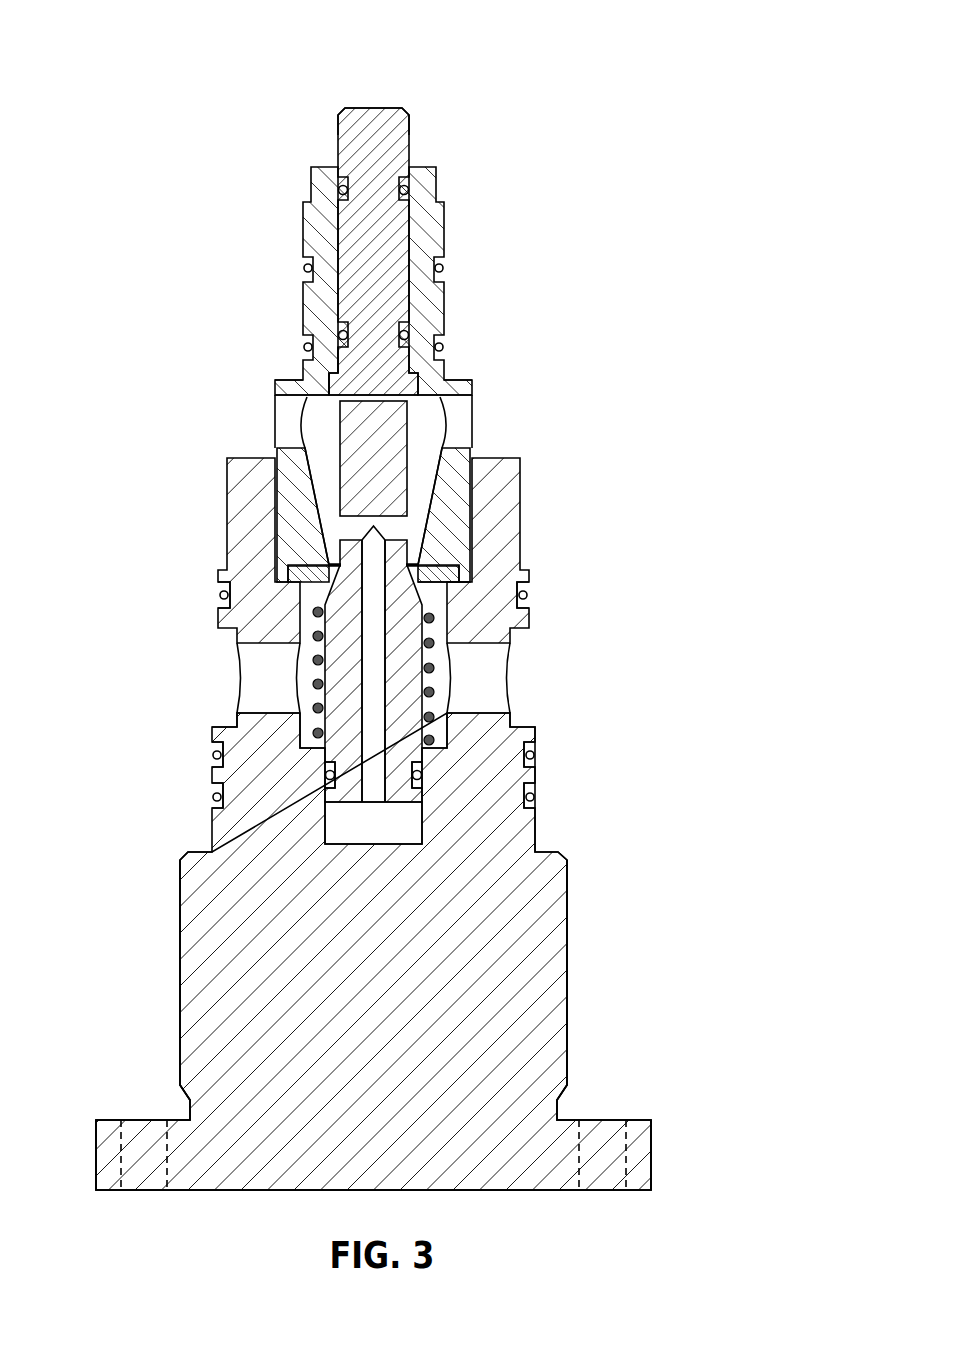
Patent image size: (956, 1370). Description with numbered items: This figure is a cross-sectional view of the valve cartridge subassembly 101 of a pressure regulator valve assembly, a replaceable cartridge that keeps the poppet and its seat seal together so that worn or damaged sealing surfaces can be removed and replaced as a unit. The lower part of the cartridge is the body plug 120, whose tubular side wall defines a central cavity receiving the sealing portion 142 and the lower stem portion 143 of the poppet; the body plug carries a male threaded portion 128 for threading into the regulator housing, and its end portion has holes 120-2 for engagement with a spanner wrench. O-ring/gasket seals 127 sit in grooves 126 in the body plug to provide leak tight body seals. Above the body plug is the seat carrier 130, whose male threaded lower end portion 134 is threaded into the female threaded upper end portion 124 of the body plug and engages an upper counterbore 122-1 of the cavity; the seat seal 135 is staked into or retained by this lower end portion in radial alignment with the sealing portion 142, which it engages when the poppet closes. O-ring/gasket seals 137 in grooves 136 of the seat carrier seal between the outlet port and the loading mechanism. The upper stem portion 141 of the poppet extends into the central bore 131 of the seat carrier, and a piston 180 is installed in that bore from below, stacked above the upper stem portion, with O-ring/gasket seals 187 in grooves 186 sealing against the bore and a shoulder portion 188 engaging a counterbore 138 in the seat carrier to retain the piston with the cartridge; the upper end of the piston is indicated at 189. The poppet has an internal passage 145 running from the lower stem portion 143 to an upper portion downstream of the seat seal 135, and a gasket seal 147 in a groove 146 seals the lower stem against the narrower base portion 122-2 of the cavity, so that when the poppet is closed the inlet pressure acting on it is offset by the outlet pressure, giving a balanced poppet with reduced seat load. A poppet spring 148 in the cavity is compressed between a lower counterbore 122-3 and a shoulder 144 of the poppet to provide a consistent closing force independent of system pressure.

The valve cartridge subassembly 101 is at (160, 318).
The body plug 120 is at (566, 776).
The holes 120-2 is at (121, 1168).
The upper counterbore 122-1 is at (288, 580).
The narrower base portion 122-2 is at (425, 824).
The lower counterbore 122-3 is at (318, 740).
The female threaded upper end portion 124 is at (277, 490).
The grooves 126 is at (221, 595).
The O-ring/gasket seals 127 is at (527, 595).
The male threaded portion 128 is at (567, 905).
The seat carrier 130 is at (502, 322).
The central bore 131 is at (432, 473).
The male threaded lower end portion 134 is at (478, 542).
The seat seal 135 is at (447, 580).
The grooves 136 is at (304, 347).
The O-ring/gasket seals 137 is at (443, 347).
The counterbore 138 is at (410, 365).
The upper stem portion 141 is at (382, 450).
The sealing portion 142 is at (415, 563).
The lower stem portion 143 is at (330, 760).
The shoulder 144 is at (432, 605).
The internal passage 145 is at (422, 675).
The groove 146 is at (363, 695).
The gasket seal 147 is at (419, 777).
The poppet spring 148 is at (313, 660).
The piston 180 is at (377, 162).
The grooves 186 is at (405, 330).
The O-ring/gasket seals 187 is at (341, 333).
The shoulder portion 188 is at (337, 373).
The stem end 189 is at (384, 118).